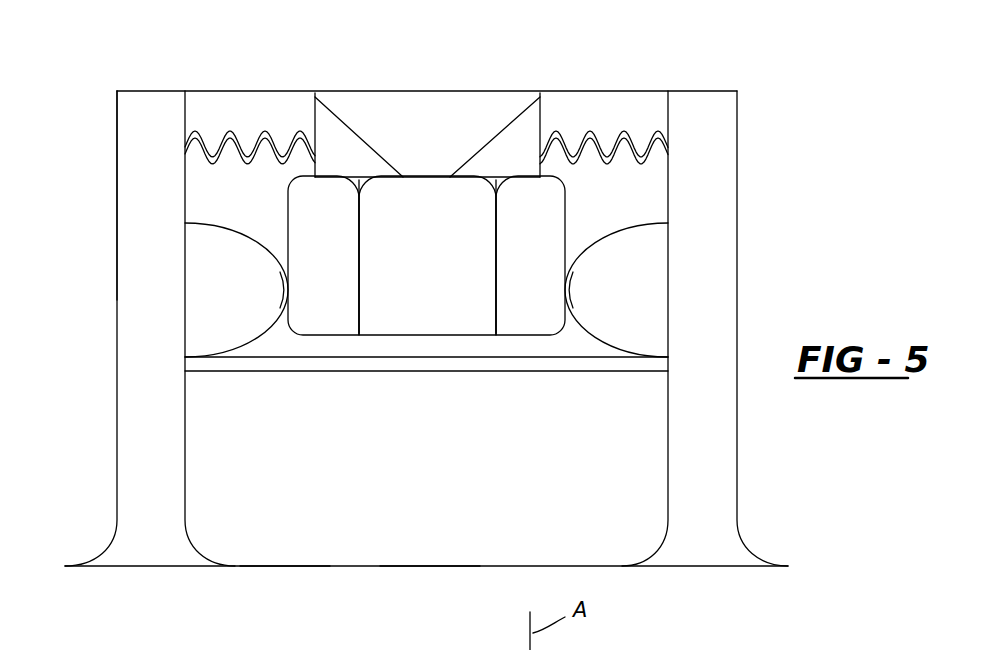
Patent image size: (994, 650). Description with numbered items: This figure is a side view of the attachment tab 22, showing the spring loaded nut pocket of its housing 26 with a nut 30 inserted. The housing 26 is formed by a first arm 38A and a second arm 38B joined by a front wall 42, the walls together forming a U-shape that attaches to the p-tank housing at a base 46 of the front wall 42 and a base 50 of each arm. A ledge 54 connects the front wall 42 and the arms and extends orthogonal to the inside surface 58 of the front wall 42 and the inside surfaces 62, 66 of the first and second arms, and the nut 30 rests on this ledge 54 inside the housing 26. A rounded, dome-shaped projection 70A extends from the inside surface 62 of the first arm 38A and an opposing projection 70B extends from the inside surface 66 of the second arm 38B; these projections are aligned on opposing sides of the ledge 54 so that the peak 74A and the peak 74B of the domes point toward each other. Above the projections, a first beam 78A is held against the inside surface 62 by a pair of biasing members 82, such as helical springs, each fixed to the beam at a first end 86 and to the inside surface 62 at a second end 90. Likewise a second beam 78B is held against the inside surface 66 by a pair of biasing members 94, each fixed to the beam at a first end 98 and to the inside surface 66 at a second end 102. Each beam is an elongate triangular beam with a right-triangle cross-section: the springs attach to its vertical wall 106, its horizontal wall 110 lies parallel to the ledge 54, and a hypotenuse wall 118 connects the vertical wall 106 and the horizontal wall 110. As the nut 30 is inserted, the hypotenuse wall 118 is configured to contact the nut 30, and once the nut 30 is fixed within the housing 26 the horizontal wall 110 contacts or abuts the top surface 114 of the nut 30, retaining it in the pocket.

The attachment tab 22 is at (756, 36).
The housing 26 is at (116, 99).
The nut 30 is at (435, 308).
The first arm 38A is at (133, 465).
The second arm 38B is at (708, 388).
The front wall 42 is at (310, 512).
The base of the front wall 46 is at (437, 567).
The base of the opposing arms 50 is at (160, 567).
The ledge 54 is at (338, 372).
The inside surface of the front wall 58 is at (593, 502).
The inside surface of the first arm 62 is at (185, 433).
The inside surface of the second arm 66 is at (670, 422).
The projection 70A is at (220, 318).
The projection 70B is at (633, 302).
The peak 74A is at (287, 288).
The peak 74B is at (565, 290).
The first beam 78A is at (314, 98).
The second beam 78B is at (538, 112).
The biasing members 82 is at (233, 130).
The first end 86 is at (320, 158).
The second end 90 is at (188, 152).
The biasing members 94 is at (543, 123).
The first end 98 is at (530, 117).
The second end 102 is at (670, 150).
The vertical wall 106 is at (627, 127).
The horizontal wall 110 is at (497, 177).
The top surface 114 is at (427, 178).
The hypotenuse wall 118 is at (513, 120).